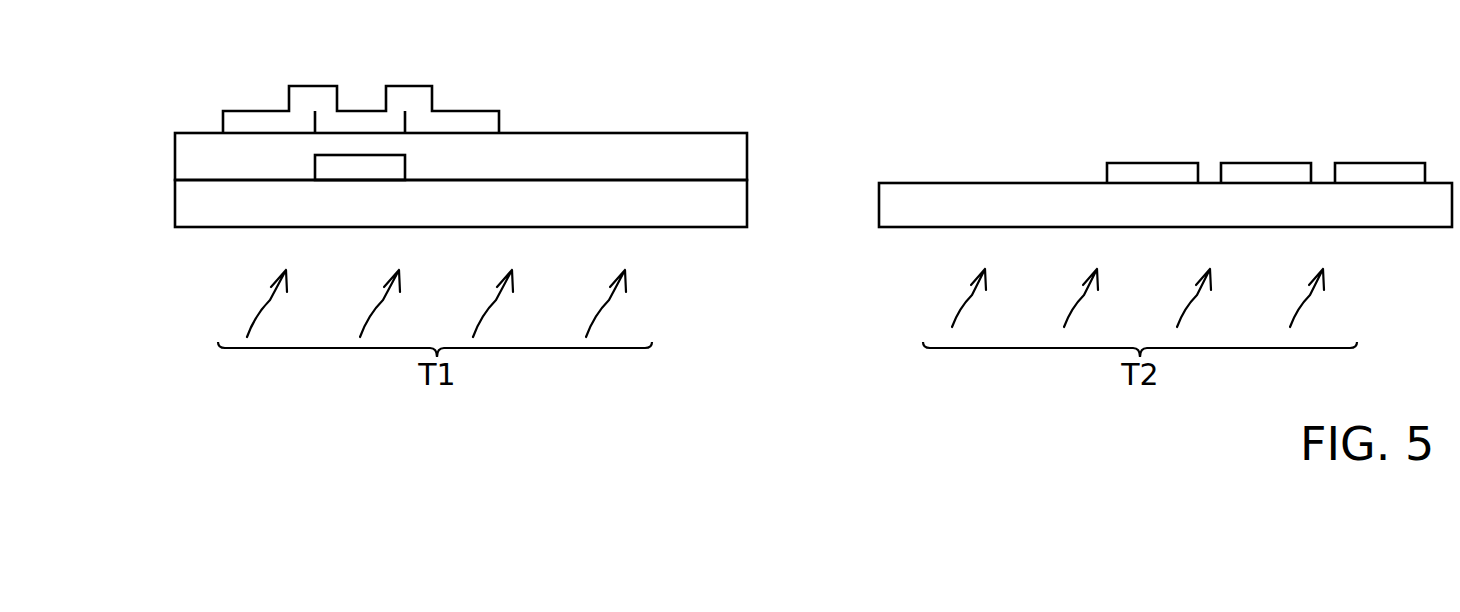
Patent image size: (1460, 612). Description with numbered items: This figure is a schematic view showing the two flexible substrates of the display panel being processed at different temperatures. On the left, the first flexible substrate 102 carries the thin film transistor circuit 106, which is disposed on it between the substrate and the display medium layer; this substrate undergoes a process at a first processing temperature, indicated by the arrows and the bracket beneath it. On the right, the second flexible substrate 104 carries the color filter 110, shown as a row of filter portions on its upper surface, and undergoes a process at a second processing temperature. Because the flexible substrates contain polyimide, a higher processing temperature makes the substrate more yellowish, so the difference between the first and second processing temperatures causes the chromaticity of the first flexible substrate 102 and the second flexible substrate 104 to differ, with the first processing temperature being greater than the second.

The first flexible substrate 102 is at (218, 204).
The second flexible substrate 104 is at (920, 207).
The thin film transistor circuit 106 is at (172, 86).
The color filter 110 is at (1098, 173).